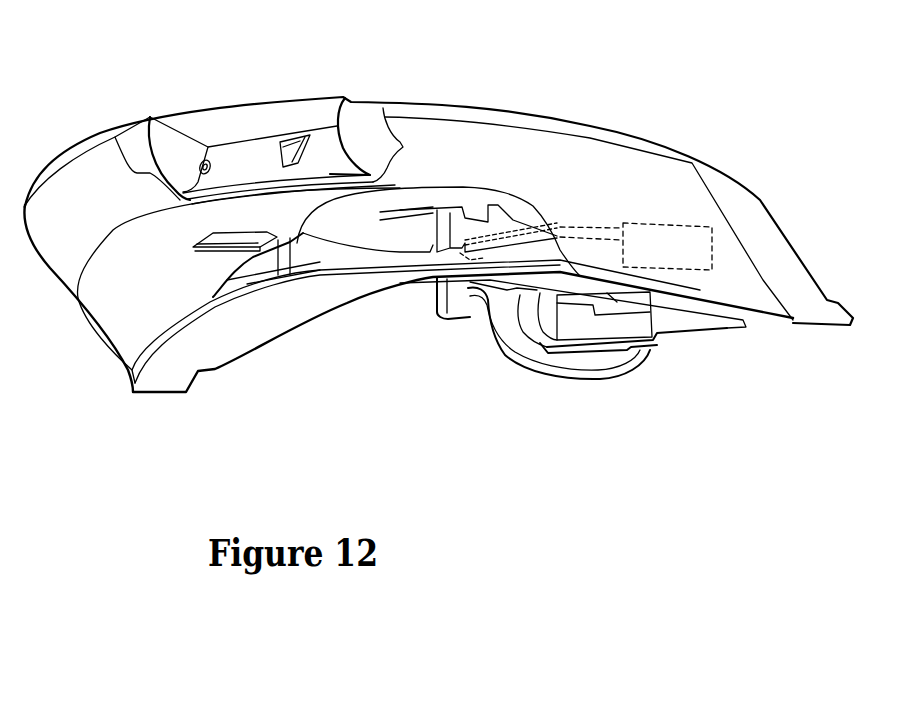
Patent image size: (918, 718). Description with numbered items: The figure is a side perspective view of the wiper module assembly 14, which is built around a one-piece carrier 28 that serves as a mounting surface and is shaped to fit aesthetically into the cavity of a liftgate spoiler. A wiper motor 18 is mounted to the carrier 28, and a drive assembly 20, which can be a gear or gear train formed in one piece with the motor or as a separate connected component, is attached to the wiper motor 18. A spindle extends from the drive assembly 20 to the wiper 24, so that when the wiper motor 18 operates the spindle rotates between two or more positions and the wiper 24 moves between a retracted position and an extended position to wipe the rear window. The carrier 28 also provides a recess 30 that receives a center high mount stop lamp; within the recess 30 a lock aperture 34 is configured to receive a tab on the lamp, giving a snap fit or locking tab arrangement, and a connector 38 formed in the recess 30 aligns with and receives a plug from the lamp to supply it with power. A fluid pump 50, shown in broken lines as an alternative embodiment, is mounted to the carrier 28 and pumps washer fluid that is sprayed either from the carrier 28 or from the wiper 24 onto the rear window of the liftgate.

The wiper module assembly 14 is at (253, 370).
The wiper motor 18 is at (670, 328).
The drive assembly 20 is at (462, 303).
The wiper 24 is at (385, 287).
The carrier 28 is at (587, 182).
The recess 30 is at (242, 122).
The lock aperture 34 is at (295, 137).
The connector 38 is at (210, 147).
The fluid pump 50 is at (713, 240).